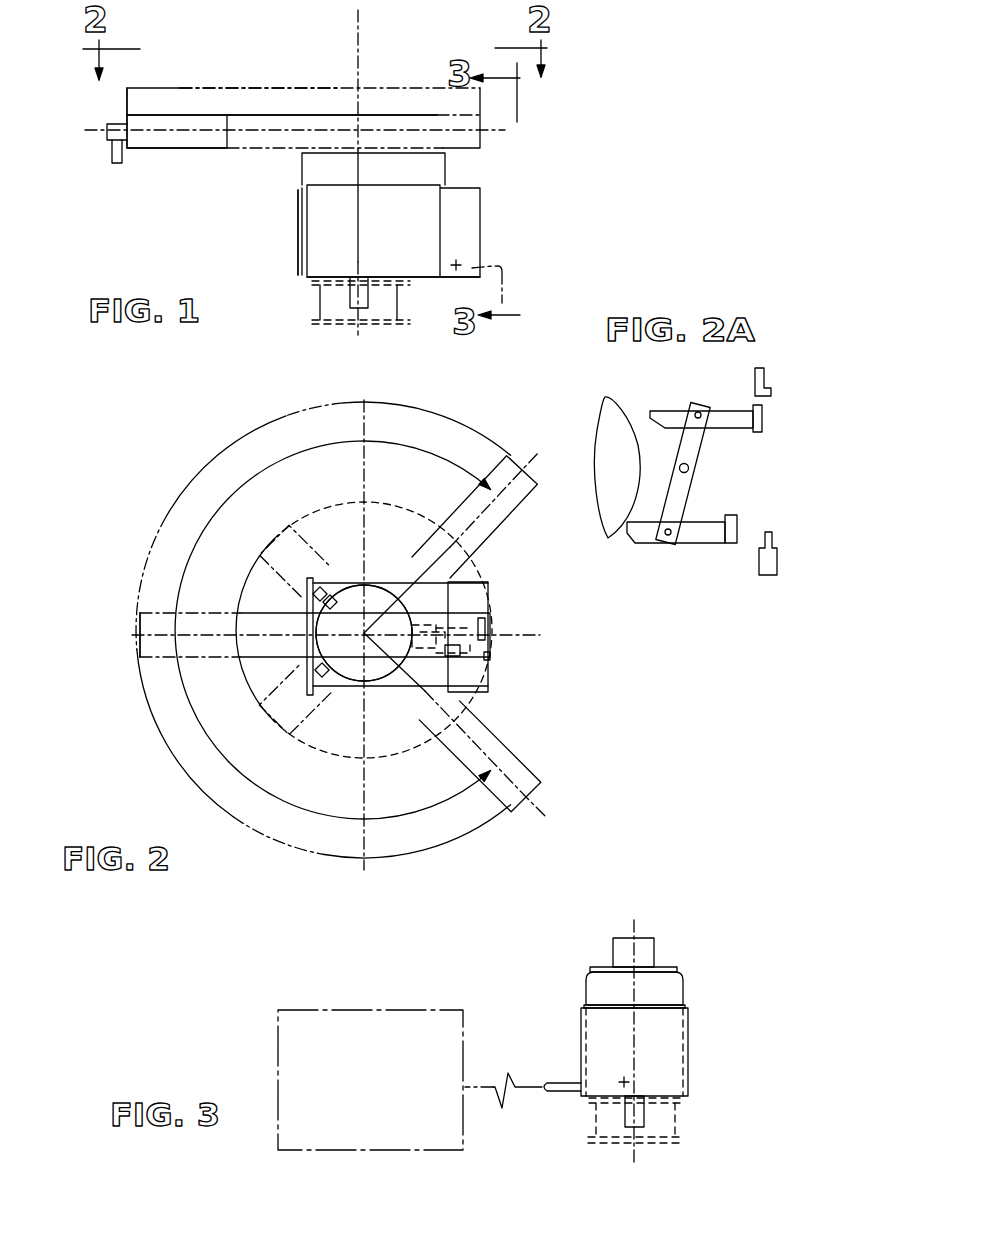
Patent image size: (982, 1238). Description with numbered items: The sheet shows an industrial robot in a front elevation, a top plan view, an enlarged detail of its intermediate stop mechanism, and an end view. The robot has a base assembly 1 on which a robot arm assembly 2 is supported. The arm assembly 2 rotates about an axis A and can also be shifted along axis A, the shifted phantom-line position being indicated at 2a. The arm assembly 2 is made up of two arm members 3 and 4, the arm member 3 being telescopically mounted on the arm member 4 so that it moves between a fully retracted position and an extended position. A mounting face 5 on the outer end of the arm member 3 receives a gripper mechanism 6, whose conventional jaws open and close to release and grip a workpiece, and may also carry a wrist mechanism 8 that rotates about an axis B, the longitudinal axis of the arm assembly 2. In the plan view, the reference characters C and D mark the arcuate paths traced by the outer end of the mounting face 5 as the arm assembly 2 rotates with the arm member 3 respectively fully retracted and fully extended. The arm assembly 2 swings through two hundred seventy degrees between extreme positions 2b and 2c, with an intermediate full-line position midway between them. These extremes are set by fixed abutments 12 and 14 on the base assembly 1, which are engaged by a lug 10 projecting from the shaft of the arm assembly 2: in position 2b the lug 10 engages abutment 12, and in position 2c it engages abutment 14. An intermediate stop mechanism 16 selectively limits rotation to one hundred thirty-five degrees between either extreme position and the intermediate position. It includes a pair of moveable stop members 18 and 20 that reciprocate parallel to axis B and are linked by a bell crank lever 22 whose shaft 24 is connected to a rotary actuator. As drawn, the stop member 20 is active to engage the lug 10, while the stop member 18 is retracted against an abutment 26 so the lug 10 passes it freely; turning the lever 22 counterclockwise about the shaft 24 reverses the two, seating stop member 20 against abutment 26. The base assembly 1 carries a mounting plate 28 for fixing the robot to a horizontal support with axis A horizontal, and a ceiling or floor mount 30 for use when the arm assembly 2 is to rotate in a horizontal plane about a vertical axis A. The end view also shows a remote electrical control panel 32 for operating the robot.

In FIG. 1, the base assembly 1 is at (278, 232).
In FIG. 2, the base assembly 1 is at (491, 560).
In FIG. 3, the base assembly 1 is at (716, 966).
In FIG. 1, the robot arm assembly 2 is at (382, 102).
In FIG. 2, the robot arm assembly 2 is at (256, 600).
In FIG. 3, the robot arm assembly 2 is at (650, 929).
In FIG. 1, the phantom line position of arm assembly 2a is at (214, 84).
In FIG. 2, the phantom line position of arm assembly 2a is at (295, 629).
In FIG. 2, the extreme position of arm assembly 2b is at (543, 767).
In FIG. 2, the extreme position of arm assembly 2c is at (538, 494).
In FIG. 1, the arm member 3 is at (182, 150).
In FIG. 2, the arm member 3 is at (147, 693).
In FIG. 1, the arm member 4 is at (283, 114).
In FIG. 2, the arm member 4 is at (298, 738).
In FIG. 1, the mounting face 5 is at (127, 92).
In FIG. 2, the mounting face 5 is at (140, 650).
In FIG. 1, the gripper mechanism 6 is at (117, 165).
In FIG. 1, the wrist mechanism 8 is at (107, 133).
In FIG. 2, the lug 10 is at (356, 588).
In FIG. 2, the fixed stop or abutment 12 is at (322, 590).
In FIG. 2, the fixed stop or abutment 14 is at (325, 680).
In FIG. 2, the intermediate stop mechanism 16 is at (430, 674).
In FIG. 2A, the intermediate stop mechanism 16 is at (658, 548).
In FIG. 2, the moveable stop member 18 is at (480, 598).
In FIG. 2A, the moveable stop member 18 is at (728, 412).
In FIG. 2, the moveable stop member 20 is at (488, 672).
In FIG. 2A, the moveable stop member 20 is at (692, 542).
In FIG. 2A, the bell crank lever 22 is at (687, 502).
In FIG. 2, the shaft 24 is at (488, 630).
In FIG. 2A, the shaft 24 is at (690, 470).
In FIG. 2A, the abutment 26 is at (770, 370).
In FIG. 1, the mounting plate 28 is at (298, 267).
In FIG. 1, the ceiling or floor mount 30 is at (362, 325).
In FIG. 3, the remote electrical control panel 32 is at (388, 963).
In FIG. 1, the axis A is at (362, 66).
In FIG. 2, the axis A is at (364, 633).
In FIG. 3, the axis A is at (636, 1058).
In FIG. 1, the axis B is at (493, 128).
In FIG. 2, the axis B is at (512, 638).
In FIG. 2, the arcuate path C is at (300, 512).
In FIG. 2, the arcuate path D is at (208, 460).